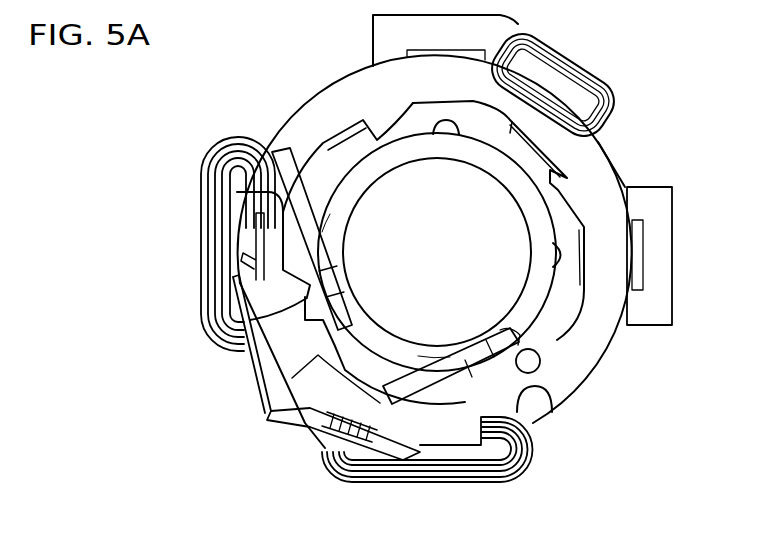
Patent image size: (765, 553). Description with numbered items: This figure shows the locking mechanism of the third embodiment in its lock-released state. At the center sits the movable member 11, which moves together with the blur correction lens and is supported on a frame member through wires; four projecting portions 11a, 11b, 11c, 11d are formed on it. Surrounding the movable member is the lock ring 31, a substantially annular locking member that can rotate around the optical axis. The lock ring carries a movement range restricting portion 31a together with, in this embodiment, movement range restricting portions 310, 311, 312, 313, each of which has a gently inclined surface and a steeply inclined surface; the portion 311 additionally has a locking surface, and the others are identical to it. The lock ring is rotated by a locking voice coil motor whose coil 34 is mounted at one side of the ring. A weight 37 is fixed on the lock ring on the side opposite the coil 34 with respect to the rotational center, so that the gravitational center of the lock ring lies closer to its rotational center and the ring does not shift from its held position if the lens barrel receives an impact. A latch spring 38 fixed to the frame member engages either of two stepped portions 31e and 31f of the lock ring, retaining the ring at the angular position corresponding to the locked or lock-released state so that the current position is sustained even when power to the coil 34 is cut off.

The movable member 11 is at (567, 308).
The projecting portion 11a is at (332, 242).
The projecting portion 11b is at (433, 357).
The projecting portion 11c is at (552, 254).
The projecting portion 11d is at (442, 128).
The lock ring 31 is at (560, 360).
The movement range restricting portion 31a is at (570, 355).
The stepped portion 31e is at (240, 197).
The stepped portion 31f is at (540, 375).
The coil 34 is at (590, 73).
The weight 37 is at (327, 400).
The latch spring 38 is at (255, 383).
The movement range restricting portion 310 is at (262, 313).
The movement range restricting portion 311 is at (480, 387).
The movement range restricting portion 312 is at (568, 200).
The movement range restricting portion 313 is at (387, 118).